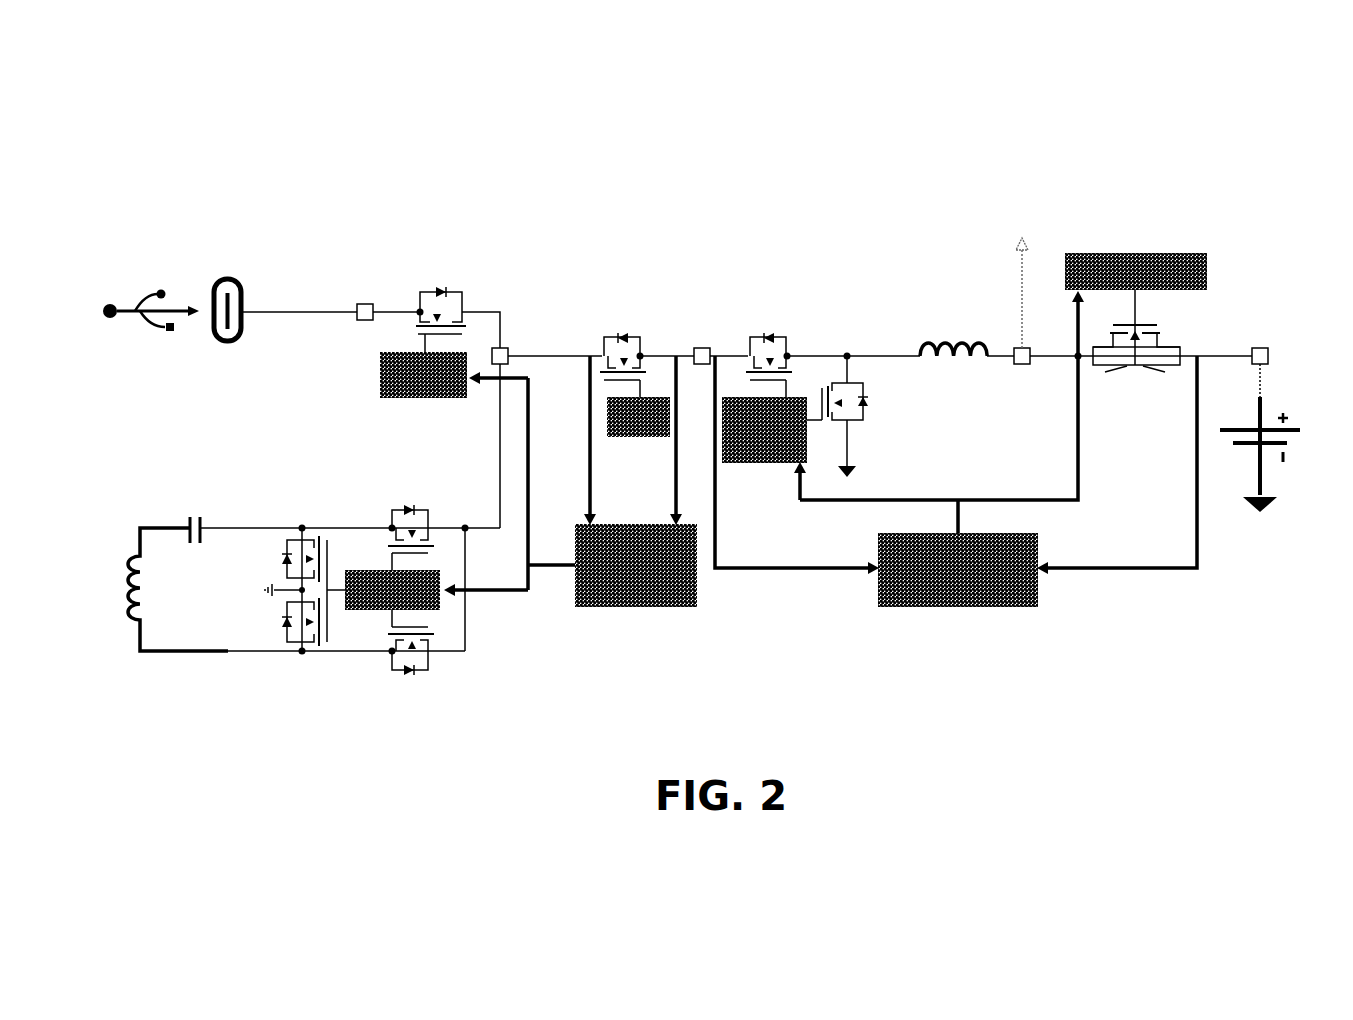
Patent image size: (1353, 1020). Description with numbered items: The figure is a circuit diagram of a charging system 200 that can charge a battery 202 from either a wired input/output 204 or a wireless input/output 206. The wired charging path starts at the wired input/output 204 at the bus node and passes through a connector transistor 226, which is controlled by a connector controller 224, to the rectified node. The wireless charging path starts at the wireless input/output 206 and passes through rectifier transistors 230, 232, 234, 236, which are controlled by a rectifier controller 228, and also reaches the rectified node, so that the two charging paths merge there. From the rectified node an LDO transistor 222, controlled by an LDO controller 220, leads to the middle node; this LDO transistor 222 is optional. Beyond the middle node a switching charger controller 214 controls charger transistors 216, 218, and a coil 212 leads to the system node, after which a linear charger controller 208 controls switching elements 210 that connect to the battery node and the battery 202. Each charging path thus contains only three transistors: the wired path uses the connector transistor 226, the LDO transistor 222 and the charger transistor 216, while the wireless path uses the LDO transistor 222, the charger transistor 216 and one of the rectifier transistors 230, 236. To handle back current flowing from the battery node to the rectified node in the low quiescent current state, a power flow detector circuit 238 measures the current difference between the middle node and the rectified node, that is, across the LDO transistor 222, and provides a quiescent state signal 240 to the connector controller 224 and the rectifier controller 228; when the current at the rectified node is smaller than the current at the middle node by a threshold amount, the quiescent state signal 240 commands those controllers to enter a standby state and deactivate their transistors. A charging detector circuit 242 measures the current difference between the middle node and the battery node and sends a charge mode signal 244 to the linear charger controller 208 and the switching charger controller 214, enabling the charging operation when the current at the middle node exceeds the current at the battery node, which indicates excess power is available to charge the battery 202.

The charging system 200 is at (730, 89).
The battery 202 is at (1273, 447).
The wired input/output 204 is at (228, 277).
The wireless input/output 206 is at (138, 560).
The linear charger controller 208 is at (1138, 252).
The switching elements 210 is at (1138, 365).
The coil 212 is at (960, 327).
The switching charger controller 214 is at (747, 463).
The charger transistor 216 is at (770, 337).
The charger transistor 218 is at (853, 422).
The LDO controller 220 is at (628, 437).
The LDO transistor 222 is at (625, 337).
The connector controller 224 is at (403, 398).
The connector transistor 226 is at (452, 290).
The rectifier controller 228 is at (365, 610).
The rectifier transistor 230 is at (405, 508).
The rectifier transistor 232 is at (287, 559).
The rectifier transistor 234 is at (287, 620).
The rectifier transistor 236 is at (420, 670).
The power flow detector circuit 238 is at (632, 610).
The Iq state signal 240 is at (538, 567).
The charging detector circuit 242 is at (942, 607).
The charge mode signal 244 is at (973, 493).